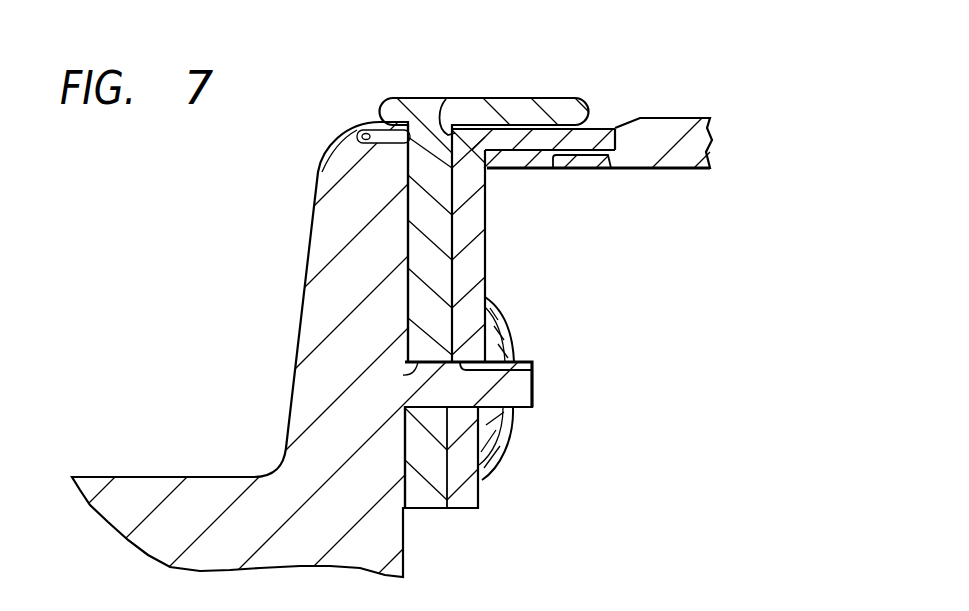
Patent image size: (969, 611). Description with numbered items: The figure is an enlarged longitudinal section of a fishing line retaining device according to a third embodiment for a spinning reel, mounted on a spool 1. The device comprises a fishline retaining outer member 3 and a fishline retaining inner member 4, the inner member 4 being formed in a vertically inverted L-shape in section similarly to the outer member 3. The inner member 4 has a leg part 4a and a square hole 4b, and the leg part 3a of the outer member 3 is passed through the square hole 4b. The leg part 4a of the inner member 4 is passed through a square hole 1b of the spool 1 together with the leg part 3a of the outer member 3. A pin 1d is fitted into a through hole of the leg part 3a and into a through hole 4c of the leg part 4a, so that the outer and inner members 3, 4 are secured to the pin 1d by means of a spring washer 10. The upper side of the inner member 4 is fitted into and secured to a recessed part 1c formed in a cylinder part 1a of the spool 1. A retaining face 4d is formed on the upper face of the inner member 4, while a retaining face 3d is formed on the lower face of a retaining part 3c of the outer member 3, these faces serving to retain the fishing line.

The spool 1 is at (305, 304).
The cylinder part 1a is at (680, 125).
The square hole 1b is at (553, 163).
The recessed part 1c is at (613, 168).
The pin 1d is at (527, 393).
The outer member 3 is at (404, 218).
The leg part 3a is at (417, 247).
The retaining part 3c is at (567, 108).
The retaining face 3d is at (513, 130).
The inner member 4 is at (516, 269).
The leg part 4a is at (477, 242).
The square hole 4b is at (441, 127).
The through hole 4c is at (534, 370).
The retaining face 4d is at (475, 127).
The spring washer 10 is at (508, 327).